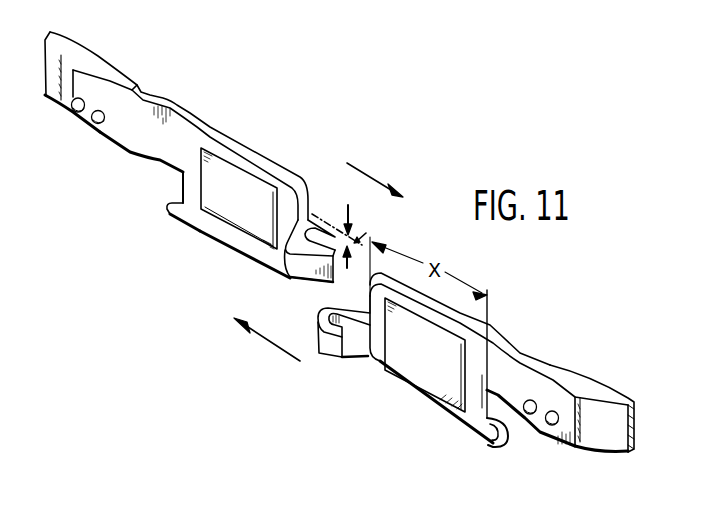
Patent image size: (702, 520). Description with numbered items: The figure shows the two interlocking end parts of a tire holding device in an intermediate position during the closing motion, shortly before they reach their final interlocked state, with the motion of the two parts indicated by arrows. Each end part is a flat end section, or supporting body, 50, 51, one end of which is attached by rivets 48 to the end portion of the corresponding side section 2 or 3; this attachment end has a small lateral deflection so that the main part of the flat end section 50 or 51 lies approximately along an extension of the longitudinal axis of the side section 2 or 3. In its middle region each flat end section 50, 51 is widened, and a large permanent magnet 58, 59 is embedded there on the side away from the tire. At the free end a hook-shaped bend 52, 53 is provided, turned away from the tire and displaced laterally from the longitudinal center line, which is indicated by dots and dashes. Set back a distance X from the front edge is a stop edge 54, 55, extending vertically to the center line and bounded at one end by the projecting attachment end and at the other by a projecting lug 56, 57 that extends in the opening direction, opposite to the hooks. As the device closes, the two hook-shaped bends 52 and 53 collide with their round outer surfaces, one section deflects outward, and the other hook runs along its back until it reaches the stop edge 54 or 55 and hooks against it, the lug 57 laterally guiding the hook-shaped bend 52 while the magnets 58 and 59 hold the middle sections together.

The side section 2 is at (73, 51).
The side section 3 is at (595, 415).
The rivets 48 is at (96, 124).
The flat end section 50 is at (166, 124).
The flat end section 51 is at (490, 343).
The hook-shaped bend 52 is at (305, 270).
The hook-shaped bend 53 is at (322, 356).
The stop edge 54 is at (183, 190).
The stop edge 55 is at (478, 426).
The projecting lug 56 is at (172, 216).
The projecting lug 57 is at (493, 448).
The permanent magnet 58 is at (256, 177).
The permanent magnet 59 is at (417, 388).